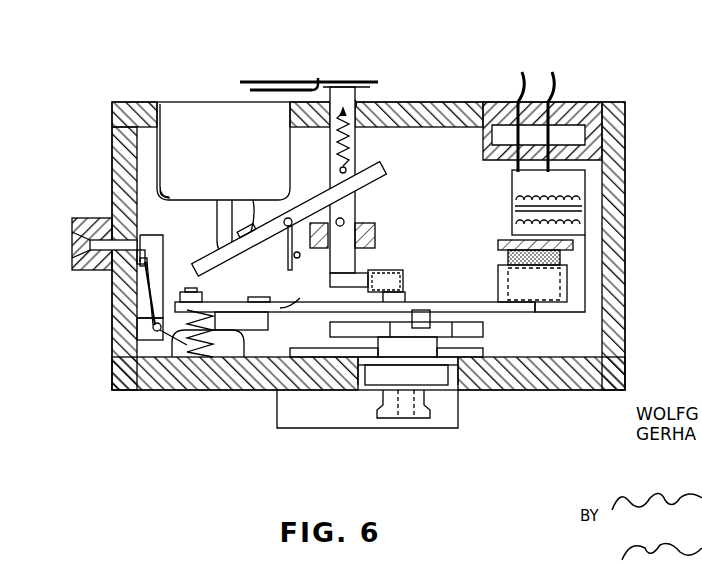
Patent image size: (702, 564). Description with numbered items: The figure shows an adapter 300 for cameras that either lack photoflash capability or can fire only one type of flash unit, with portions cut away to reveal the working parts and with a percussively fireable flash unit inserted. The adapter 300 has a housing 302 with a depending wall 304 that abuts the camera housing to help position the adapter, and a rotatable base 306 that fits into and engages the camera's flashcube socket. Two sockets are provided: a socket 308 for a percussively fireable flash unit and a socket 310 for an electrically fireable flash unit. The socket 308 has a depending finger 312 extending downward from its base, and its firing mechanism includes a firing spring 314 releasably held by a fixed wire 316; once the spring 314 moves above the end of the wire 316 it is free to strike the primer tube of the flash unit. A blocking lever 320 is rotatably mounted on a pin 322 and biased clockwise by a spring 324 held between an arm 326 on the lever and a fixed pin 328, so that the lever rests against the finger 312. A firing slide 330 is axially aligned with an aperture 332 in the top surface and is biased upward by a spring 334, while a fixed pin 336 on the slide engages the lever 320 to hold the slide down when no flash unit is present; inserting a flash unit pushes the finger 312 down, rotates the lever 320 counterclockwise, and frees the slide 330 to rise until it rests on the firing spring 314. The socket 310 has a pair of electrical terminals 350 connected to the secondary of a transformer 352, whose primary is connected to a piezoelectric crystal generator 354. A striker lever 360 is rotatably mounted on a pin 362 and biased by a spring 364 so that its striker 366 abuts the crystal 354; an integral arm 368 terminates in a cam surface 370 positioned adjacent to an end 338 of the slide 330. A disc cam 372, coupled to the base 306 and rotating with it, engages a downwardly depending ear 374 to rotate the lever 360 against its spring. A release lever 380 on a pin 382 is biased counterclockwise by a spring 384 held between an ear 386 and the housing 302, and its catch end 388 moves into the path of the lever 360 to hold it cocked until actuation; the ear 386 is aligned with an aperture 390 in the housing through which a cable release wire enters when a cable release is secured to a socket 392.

The adapter 300 is at (518, 397).
The housing 302 is at (618, 333).
The depending wall 304 is at (302, 413).
The rotatable base 306 is at (408, 415).
The socket 308 is at (192, 107).
The socket 310 is at (575, 105).
The depending finger 312 is at (180, 197).
The firing spring 314 is at (280, 82).
The fixed wire 316 is at (318, 76).
The blocking lever 320 is at (385, 162).
The pin 322 is at (283, 215).
The spring 324 is at (217, 218).
The arm 326 is at (253, 220).
The fixed pin 328 is at (295, 257).
The firing slide 330 is at (338, 88).
The aperture 332 is at (357, 103).
The spring 334 is at (340, 150).
The fixed pin 336 is at (345, 220).
The end 338 is at (357, 273).
The electrical terminals 350 is at (521, 75).
The transformer 352 is at (508, 202).
The piezoelectric crystal generator 354 is at (558, 252).
The striker lever 360 is at (533, 306).
The pin 362 is at (187, 350).
The spring 364 is at (237, 355).
The striker 366 is at (567, 287).
The integral arm 368 is at (403, 297).
The cam surface 370 is at (400, 272).
The disc cam 372 is at (477, 332).
The ear 374 is at (430, 312).
The release lever 380 is at (158, 263).
The pin 382 is at (153, 328).
The spring 384 is at (147, 305).
The ear 386 is at (140, 263).
The catch end 388 is at (273, 278).
The aperture 390 is at (110, 247).
The socket 392 is at (71, 240).